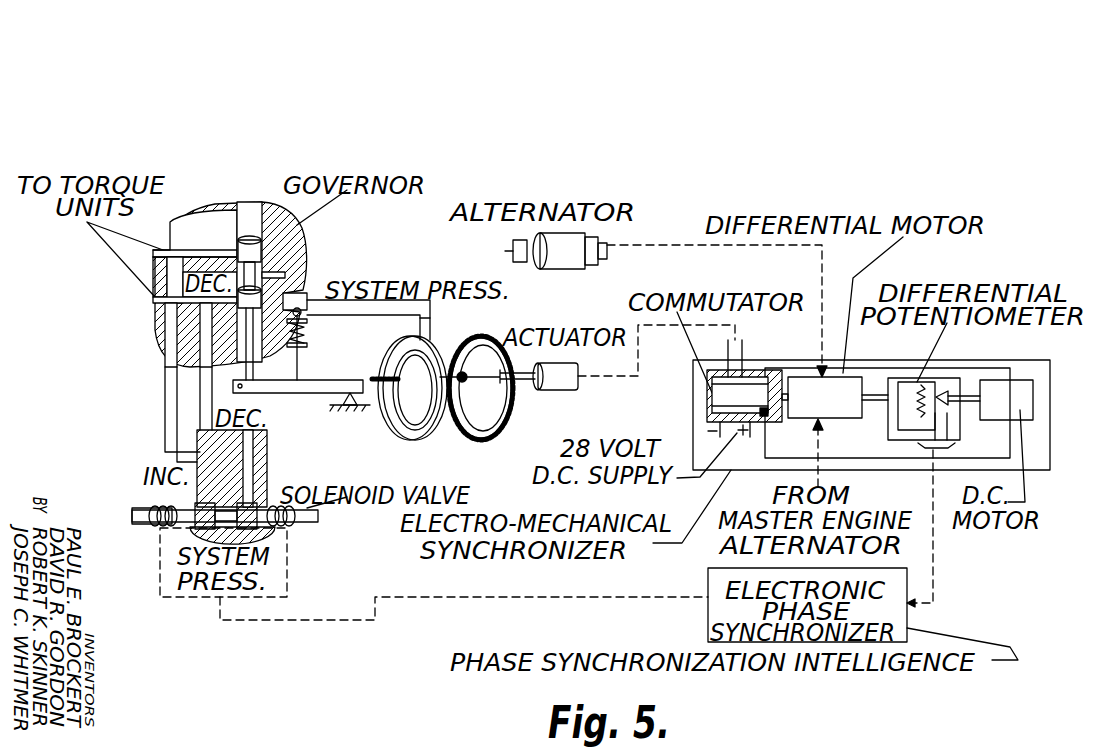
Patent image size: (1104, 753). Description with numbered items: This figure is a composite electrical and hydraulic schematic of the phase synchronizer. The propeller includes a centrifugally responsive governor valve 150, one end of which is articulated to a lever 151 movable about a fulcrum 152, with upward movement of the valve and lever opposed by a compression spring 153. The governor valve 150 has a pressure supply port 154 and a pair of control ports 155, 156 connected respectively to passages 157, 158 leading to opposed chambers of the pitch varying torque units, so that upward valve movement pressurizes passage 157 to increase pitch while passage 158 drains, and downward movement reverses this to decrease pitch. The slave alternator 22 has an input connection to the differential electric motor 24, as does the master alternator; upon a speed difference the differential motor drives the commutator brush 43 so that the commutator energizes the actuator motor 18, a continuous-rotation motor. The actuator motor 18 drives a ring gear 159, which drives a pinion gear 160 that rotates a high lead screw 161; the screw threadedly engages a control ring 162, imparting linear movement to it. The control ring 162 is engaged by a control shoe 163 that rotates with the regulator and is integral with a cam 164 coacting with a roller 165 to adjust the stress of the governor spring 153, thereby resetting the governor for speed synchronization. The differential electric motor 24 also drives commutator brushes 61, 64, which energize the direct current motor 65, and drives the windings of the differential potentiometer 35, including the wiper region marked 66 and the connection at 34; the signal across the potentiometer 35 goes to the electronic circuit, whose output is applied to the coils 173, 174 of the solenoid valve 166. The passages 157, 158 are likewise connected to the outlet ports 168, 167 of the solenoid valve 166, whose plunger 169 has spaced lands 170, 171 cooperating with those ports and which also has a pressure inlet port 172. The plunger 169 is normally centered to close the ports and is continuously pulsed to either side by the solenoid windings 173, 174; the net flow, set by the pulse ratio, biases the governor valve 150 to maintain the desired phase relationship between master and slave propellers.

The actuator motor 18 is at (561, 388).
The propeller driven alternator 22 is at (563, 268).
The differential electric motor 24 is at (826, 447).
The potentiometer output connection 34 is at (912, 415).
The differential potentiometer 35 is at (918, 382).
The commutator brush 43 is at (745, 374).
The commutator brush 61 is at (772, 370).
The commutator brush 64 is at (766, 417).
The direct current motor 65 is at (1018, 380).
The potentiometer wiper 66 is at (946, 403).
The governor valve 150 is at (250, 235).
The lever 151 is at (304, 388).
The fulcrum 152 is at (350, 410).
The compression spring 153 is at (308, 333).
The pressure supply port 154 is at (295, 275).
The control port 155 is at (228, 213).
The control port 156 is at (192, 305).
The passage 157 is at (182, 244).
The passage 158 is at (156, 322).
The ring gear 159 is at (488, 440).
The pinion gear 160 is at (464, 382).
The high lead screw 161 is at (380, 377).
The control ring 162 is at (423, 445).
The control shoe 163 is at (431, 327).
The cam 164 is at (340, 296).
The roller 165 is at (322, 313).
The solenoid valve 166 is at (362, 556).
The outlet port 167 is at (267, 478).
The outlet port 168 is at (222, 482).
The plunger 169 is at (140, 510).
The land 170 is at (195, 523).
The land 171 is at (267, 530).
The pressure inlet port 172 is at (215, 532).
The solenoid winding 173 is at (305, 522).
The solenoid winding 174 is at (155, 518).